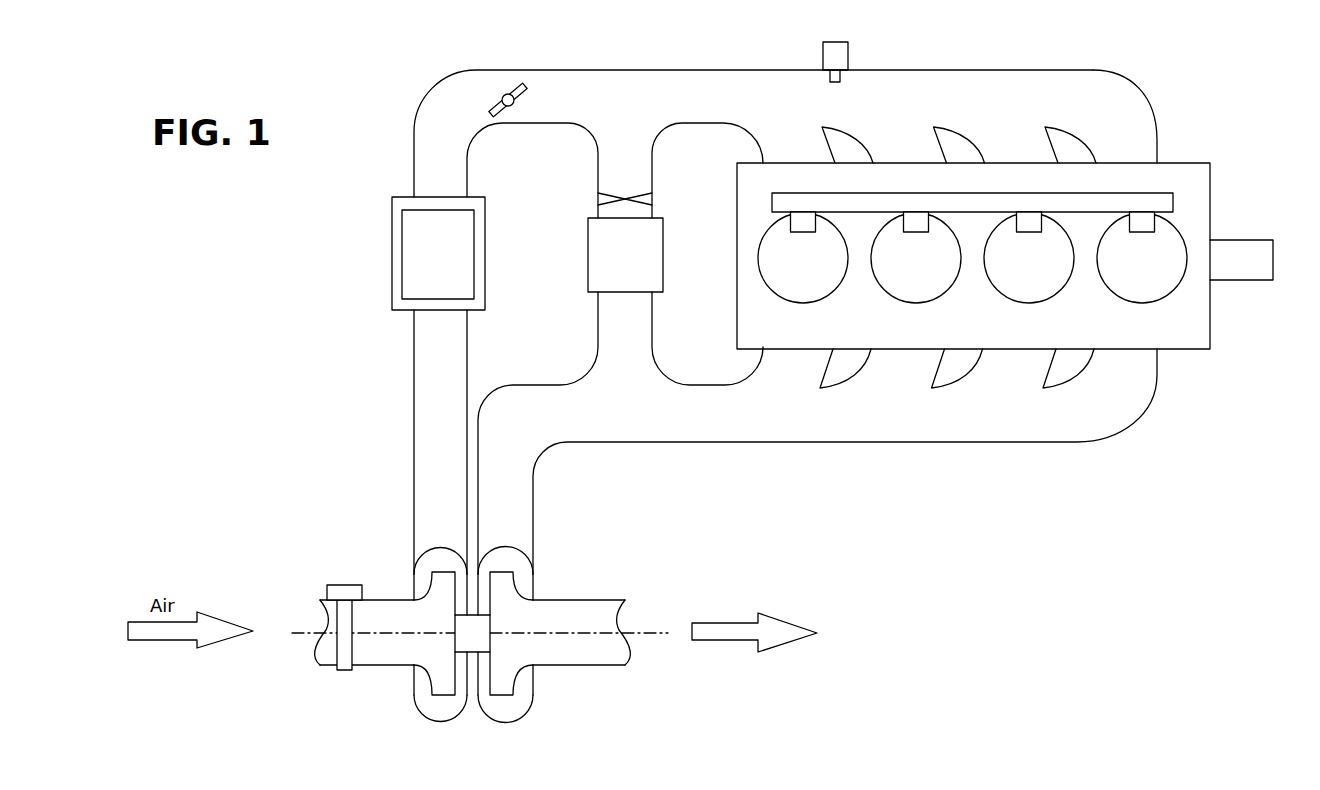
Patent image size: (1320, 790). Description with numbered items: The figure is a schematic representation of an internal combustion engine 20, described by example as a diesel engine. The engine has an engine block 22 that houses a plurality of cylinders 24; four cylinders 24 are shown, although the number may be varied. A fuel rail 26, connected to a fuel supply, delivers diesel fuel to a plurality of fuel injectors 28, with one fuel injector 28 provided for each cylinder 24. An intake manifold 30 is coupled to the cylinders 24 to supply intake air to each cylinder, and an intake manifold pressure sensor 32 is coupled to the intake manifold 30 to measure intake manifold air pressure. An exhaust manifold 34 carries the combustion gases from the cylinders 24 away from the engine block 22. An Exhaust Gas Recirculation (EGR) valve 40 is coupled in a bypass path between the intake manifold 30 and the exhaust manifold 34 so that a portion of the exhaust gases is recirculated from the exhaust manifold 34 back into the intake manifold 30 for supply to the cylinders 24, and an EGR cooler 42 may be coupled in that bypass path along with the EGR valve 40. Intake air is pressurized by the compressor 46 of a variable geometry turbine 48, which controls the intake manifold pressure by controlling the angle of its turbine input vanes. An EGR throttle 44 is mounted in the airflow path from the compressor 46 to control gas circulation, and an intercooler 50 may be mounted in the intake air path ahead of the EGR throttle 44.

The internal combustion engine 20 is at (742, 62).
The engine block 22 is at (910, 335).
The cylinder 24 is at (788, 297).
The fuel rail 26 is at (1098, 193).
The fuel injector 28 is at (805, 222).
The intake manifold 30 is at (1046, 69).
The intake manifold pressure sensor 32 is at (849, 54).
The exhaust manifold 34 is at (1026, 446).
The Exhaust Gas Recirculation (EGR) valve 40 is at (600, 193).
The EGR cooler 42 is at (583, 243).
The EGR throttle 44 is at (498, 86).
The compressor 46 is at (428, 660).
The variable geometry turbine (VGT) 48 is at (508, 662).
The intercooler 50 is at (385, 256).